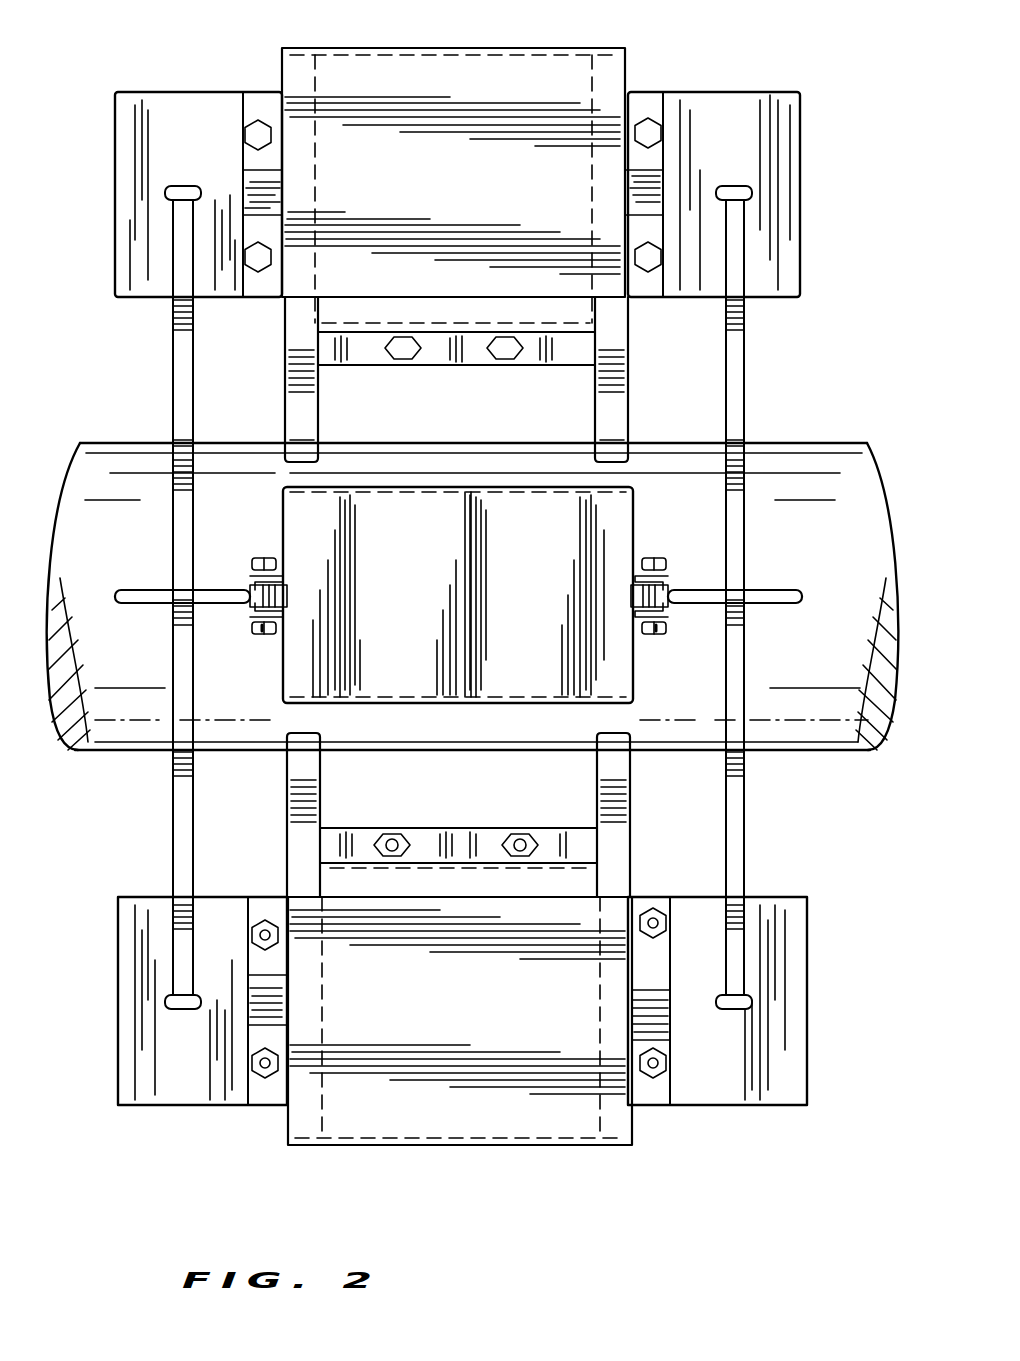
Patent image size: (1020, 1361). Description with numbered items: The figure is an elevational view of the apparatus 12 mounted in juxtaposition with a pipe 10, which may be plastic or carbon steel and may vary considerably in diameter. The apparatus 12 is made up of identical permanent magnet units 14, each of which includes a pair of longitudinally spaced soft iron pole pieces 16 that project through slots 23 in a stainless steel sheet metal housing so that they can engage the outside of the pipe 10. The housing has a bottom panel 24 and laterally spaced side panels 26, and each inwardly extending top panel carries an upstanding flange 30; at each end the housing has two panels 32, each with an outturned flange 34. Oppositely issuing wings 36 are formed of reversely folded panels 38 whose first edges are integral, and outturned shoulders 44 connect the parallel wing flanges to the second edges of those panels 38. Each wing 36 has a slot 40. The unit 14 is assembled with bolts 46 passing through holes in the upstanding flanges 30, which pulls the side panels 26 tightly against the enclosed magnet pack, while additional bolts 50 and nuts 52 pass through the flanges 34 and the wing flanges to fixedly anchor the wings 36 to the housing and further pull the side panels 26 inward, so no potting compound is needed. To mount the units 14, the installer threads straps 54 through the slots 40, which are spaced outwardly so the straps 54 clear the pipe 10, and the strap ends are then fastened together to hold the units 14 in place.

The pipe 10 is at (838, 756).
The apparatus 12 is at (190, 1108).
The unit 14 is at (800, 118).
The pole piece 16 is at (310, 408).
The slot 23 is at (300, 312).
The bottom panel 24 is at (460, 62).
The side panel 26 is at (575, 85).
The upstanding flange 30 is at (455, 366).
The end panel 32 is at (250, 196).
The outturned flange 34 is at (243, 148).
The wing 36 is at (105, 288).
The reversely folded panel 38 is at (150, 590).
The slot 40 is at (168, 193).
The outturned shoulder 44 is at (250, 588).
The bolt 46 is at (405, 345).
The bolt 50 is at (258, 130).
The nut 52 is at (262, 636).
The strap 54 is at (746, 377).